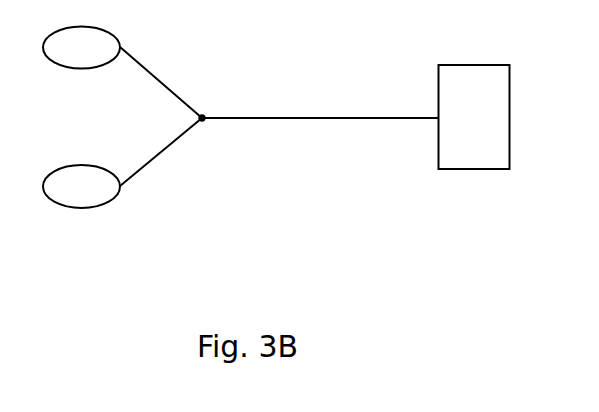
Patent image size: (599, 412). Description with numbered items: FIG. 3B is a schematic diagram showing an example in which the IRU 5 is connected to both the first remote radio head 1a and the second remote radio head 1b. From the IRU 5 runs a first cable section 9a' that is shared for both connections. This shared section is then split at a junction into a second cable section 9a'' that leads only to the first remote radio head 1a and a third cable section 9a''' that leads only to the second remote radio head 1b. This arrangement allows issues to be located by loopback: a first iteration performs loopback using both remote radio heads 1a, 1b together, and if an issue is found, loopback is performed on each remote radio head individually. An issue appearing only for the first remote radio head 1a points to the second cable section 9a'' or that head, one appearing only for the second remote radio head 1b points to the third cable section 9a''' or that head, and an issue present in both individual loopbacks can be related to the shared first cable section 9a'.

The first remote radio head 1a is at (98, 64).
The second remote radio head 1b is at (98, 200).
The IRU 5 is at (482, 128).
The first cable section 9a' is at (319, 81).
The second cable section 9a'' is at (168, 66).
The third cable section 9a''' is at (186, 163).